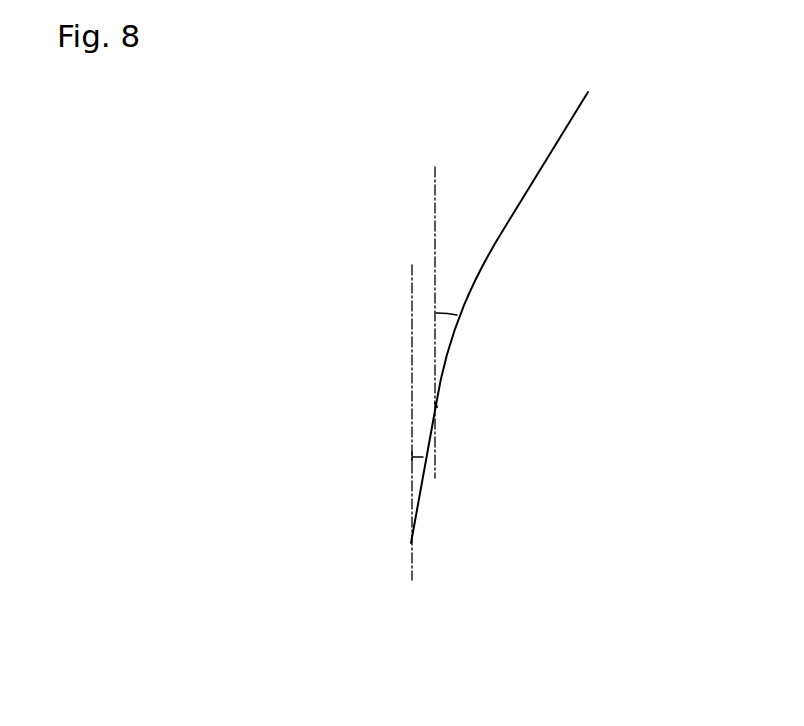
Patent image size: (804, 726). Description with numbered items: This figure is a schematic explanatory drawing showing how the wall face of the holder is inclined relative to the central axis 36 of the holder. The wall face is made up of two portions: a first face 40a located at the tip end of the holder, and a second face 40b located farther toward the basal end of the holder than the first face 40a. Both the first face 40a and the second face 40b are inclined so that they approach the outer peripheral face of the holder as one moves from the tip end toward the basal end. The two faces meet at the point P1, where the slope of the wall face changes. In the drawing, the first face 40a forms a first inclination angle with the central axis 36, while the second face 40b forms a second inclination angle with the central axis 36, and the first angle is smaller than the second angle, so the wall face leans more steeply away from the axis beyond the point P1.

The central axis 36 is at (434, 229).
The first face 40a is at (418, 500).
The second face 40b is at (508, 228).
The inflection point between portions 40a and 40b P1 is at (435, 404).